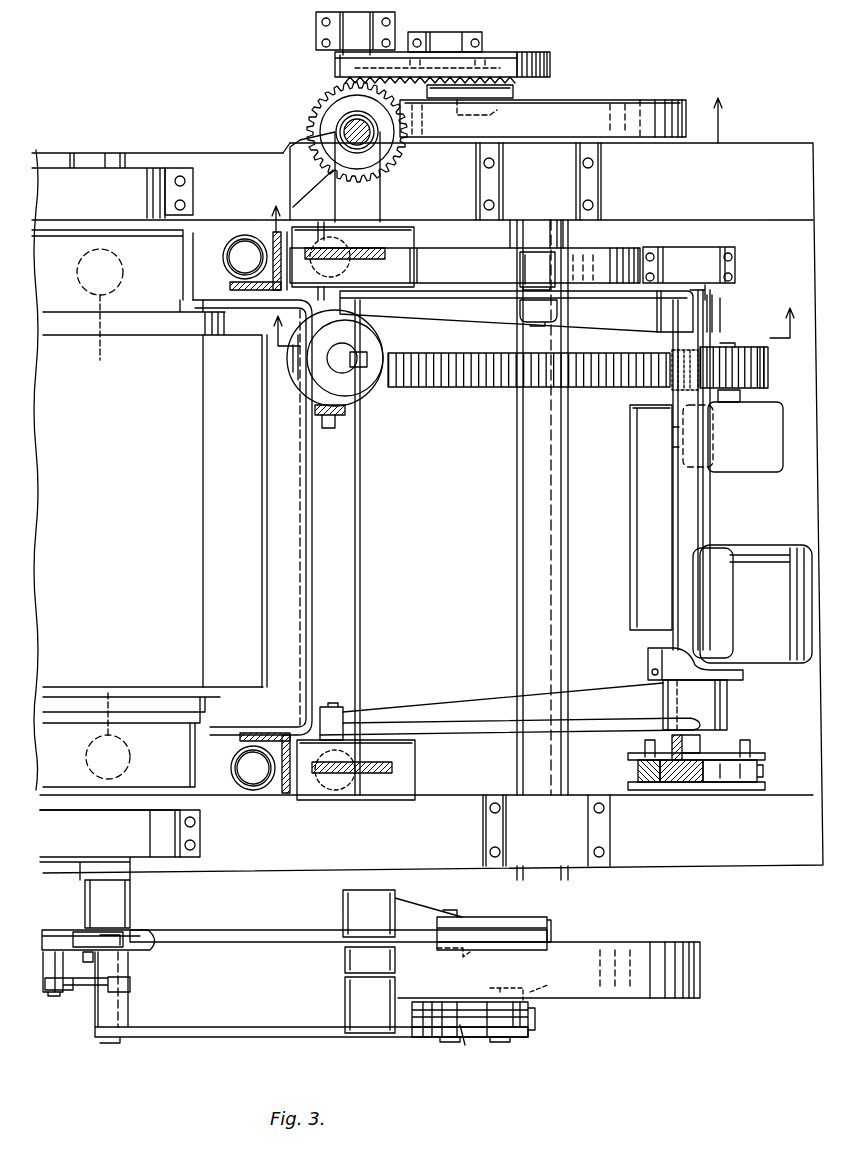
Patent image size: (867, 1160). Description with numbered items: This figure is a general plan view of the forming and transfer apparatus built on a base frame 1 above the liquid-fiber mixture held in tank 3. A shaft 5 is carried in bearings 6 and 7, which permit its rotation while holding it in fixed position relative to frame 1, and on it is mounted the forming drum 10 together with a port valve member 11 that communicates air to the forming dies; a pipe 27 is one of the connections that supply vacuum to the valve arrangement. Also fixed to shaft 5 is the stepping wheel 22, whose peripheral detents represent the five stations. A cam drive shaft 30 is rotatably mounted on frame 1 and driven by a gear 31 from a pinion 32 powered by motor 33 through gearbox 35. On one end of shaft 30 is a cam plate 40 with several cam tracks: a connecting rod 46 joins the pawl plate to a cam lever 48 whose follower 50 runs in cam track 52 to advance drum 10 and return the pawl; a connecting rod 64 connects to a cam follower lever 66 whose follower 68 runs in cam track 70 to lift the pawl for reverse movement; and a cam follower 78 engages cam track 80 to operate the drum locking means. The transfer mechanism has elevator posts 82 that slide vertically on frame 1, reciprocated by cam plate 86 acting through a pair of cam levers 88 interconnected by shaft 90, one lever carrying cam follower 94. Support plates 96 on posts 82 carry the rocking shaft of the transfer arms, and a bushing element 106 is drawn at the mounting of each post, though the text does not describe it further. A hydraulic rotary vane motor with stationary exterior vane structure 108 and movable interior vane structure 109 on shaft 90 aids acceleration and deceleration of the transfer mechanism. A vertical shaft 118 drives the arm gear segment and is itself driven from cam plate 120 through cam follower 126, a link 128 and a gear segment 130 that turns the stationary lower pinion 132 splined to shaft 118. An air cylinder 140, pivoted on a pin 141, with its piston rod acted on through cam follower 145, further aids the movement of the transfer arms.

The base frame 1 is at (772, 842).
The tank 3 is at (315, 695).
The shaft 5 is at (85, 902).
The bearing 6 is at (170, 860).
The bearing 7 is at (147, 165).
The forming drum 10 is at (149, 515).
The port valve member 11 is at (198, 200).
The stepping wheel 22 is at (152, 955).
The pipe 27 is at (113, 720).
The cam drive shaft 30 is at (515, 630).
The gear 31 is at (612, 388).
The pinion 32 is at (770, 375).
The motor 33 is at (772, 535).
The gearbox 35 is at (772, 452).
The cam plate 40 is at (640, 940).
The connecting rod 46 is at (290, 922).
The cam lever 48 is at (425, 908).
The follower 50 is at (485, 927).
The cam track 52 is at (407, 968).
The connecting rod 64 is at (275, 1035).
The cam follower lever 66 is at (515, 1012).
The cam follower 68 is at (508, 985).
The cam track 70 is at (556, 988).
The cam follower 78 is at (427, 1007).
The cam track 80 is at (477, 1049).
The elevator post 82 is at (320, 230).
The cam plate 86 is at (610, 245).
The cam lever 88 is at (450, 308).
The shaft 90 is at (695, 515).
The cam follower 94 is at (530, 268).
The support plate 96 is at (405, 228).
The bushing 106 is at (225, 252).
The stationary exterior vane structure 108 is at (652, 800).
The movable interior vane structure 109 is at (692, 795).
The vertical shaft 118 is at (340, 128).
The cam plate 120 is at (605, 95).
The cam follower 126 is at (503, 122).
The link 128 is at (497, 75).
The gear segment 130 is at (552, 58).
The lower pinion 132 is at (351, 126).
The air cylinder 140 is at (300, 390).
The pin 141 is at (330, 430).
The cam follower 145 is at (362, 370).